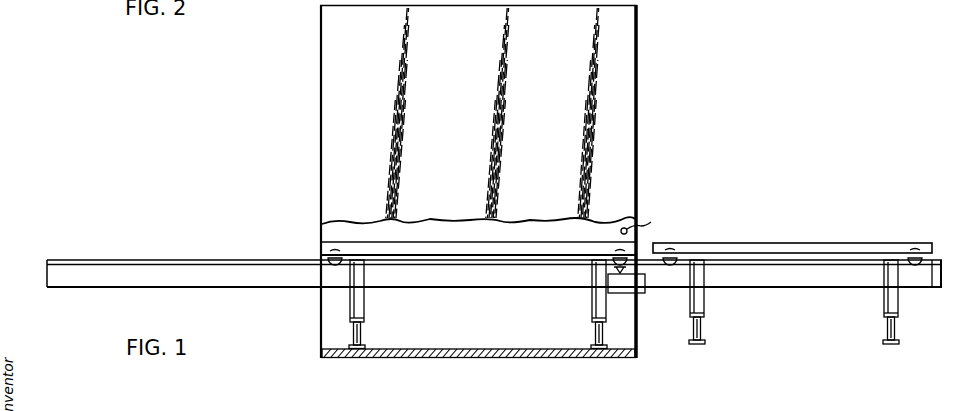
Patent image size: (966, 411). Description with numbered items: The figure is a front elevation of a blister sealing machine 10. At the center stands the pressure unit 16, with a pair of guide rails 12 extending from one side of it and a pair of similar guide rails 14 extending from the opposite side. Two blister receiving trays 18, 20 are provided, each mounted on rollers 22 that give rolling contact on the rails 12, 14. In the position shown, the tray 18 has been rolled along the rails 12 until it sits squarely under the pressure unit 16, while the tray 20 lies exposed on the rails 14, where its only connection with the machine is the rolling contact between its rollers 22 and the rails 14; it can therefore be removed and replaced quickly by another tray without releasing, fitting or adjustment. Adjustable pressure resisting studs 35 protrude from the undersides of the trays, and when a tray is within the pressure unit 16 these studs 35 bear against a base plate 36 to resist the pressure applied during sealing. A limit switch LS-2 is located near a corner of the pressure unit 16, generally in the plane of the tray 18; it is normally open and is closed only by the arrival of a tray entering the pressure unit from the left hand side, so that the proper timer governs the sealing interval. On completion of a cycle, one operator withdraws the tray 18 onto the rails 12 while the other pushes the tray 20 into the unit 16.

The machine 10 is at (638, 73).
The guide rails 12 is at (240, 281).
The guide rails 14 is at (789, 278).
The pressure unit 16 is at (362, 48).
The blister receiving tray 18 is at (332, 241).
The blister receiving tray 20 is at (772, 245).
The rollers 22 is at (330, 262).
The pressure resisting studs 35 is at (366, 308).
The base plate 36 is at (495, 347).
The limit switch LS-2 is at (654, 219).